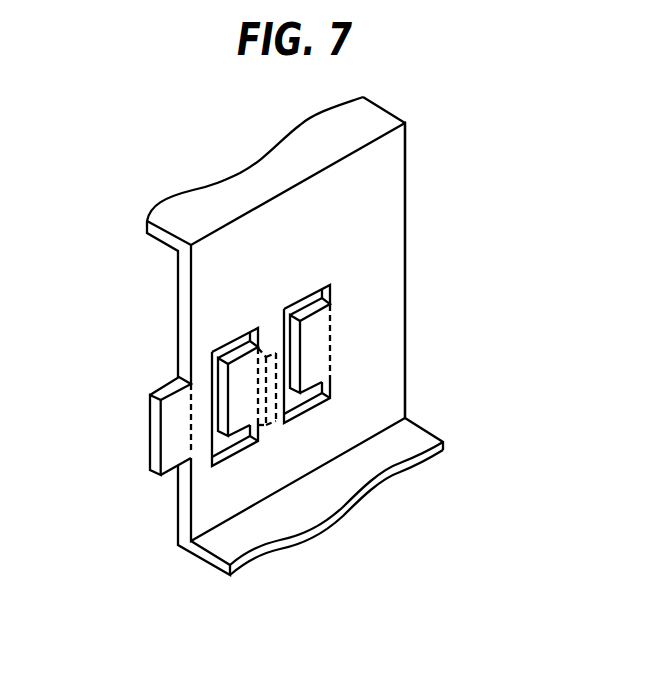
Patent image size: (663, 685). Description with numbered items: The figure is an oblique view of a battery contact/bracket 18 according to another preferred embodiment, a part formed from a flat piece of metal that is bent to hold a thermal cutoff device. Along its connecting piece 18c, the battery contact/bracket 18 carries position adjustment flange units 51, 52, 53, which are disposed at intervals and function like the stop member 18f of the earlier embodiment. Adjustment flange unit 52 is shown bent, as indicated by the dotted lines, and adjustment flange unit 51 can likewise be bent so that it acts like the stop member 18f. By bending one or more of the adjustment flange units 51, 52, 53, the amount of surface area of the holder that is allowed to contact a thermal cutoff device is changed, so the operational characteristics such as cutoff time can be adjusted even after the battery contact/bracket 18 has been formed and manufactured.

The battery contact/bracket 18 is at (412, 162).
The connecting piece 18c is at (405, 243).
The stop member 18f is at (270, 423).
The position adjustment flange unit 51 is at (180, 420).
The position adjustment flange unit 52 is at (245, 370).
The position adjustment flange unit 53 is at (318, 351).